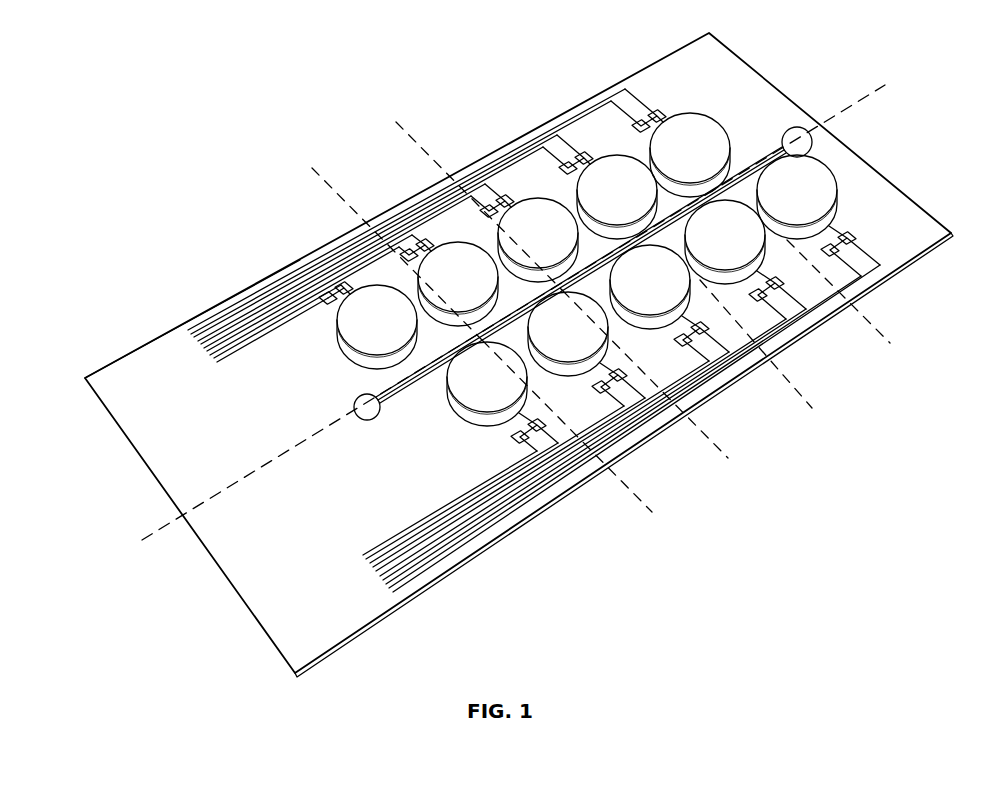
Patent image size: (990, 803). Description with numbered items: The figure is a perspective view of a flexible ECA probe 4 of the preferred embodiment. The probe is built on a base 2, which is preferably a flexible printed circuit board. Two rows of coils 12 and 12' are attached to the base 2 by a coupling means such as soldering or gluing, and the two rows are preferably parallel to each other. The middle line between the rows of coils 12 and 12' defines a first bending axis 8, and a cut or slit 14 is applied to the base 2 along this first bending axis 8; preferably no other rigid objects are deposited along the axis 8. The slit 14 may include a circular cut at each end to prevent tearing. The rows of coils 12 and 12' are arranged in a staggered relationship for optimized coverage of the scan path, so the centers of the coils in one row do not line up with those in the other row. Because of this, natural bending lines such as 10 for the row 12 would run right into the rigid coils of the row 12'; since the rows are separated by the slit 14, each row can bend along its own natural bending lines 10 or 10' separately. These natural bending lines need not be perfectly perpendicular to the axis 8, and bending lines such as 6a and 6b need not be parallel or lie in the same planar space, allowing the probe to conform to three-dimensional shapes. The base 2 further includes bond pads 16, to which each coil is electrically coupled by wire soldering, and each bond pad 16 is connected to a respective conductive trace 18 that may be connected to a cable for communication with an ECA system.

The base 2 is at (922, 235).
The flexible ECA probe 4 is at (193, 281).
The natural bending line 6a is at (801, 402).
The natural bending line 6b is at (872, 340).
The first bending axis 8 is at (140, 528).
The natural bending line 10 is at (605, 419).
The natural bending line 10' is at (432, 216).
The row of coils 12 is at (656, 306).
The row of coils 12' is at (529, 242).
The slit 14 is at (800, 130).
The bond pads 16 is at (643, 121).
The conductive trace 18 is at (530, 128).